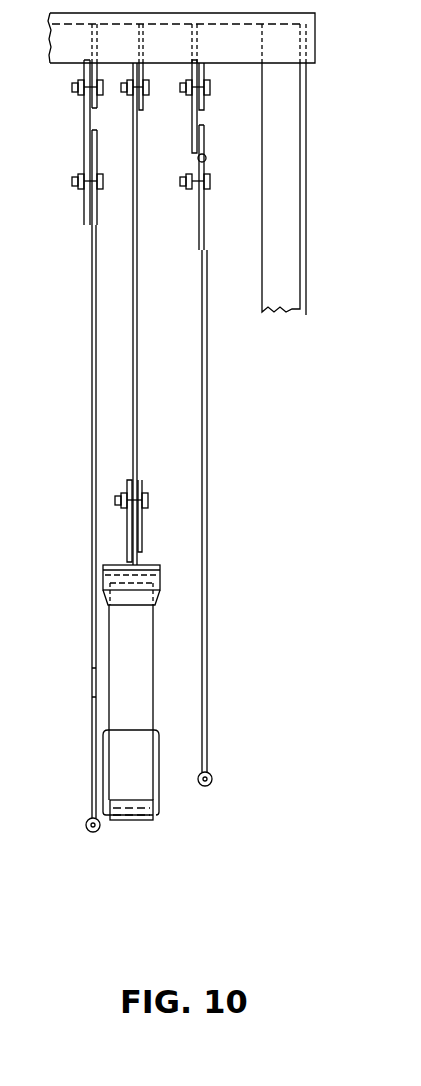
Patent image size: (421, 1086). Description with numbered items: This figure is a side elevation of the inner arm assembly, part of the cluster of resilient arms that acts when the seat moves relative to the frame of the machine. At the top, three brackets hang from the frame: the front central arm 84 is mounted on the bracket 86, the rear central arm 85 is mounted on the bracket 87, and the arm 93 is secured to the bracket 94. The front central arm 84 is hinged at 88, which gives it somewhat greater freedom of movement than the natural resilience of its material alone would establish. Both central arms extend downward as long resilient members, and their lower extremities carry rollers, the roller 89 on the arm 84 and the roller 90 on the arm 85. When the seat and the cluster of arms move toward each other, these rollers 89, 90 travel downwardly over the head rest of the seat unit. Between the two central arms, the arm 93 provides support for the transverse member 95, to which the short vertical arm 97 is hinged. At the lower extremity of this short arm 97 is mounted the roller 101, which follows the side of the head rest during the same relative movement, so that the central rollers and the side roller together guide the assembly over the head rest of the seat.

The front central arm 84 is at (207, 520).
The rear central arm 85 is at (92, 522).
The bracket 86 is at (197, 117).
The bracket 87 is at (84, 123).
The hinge 88 is at (206, 158).
The roller 89 is at (210, 785).
The roller 90 is at (92, 832).
The arm 93 is at (133, 381).
The bracket 94 is at (143, 105).
The transverse member 95 is at (158, 565).
The short vertical arm 97 is at (113, 645).
The roller 101 is at (133, 820).